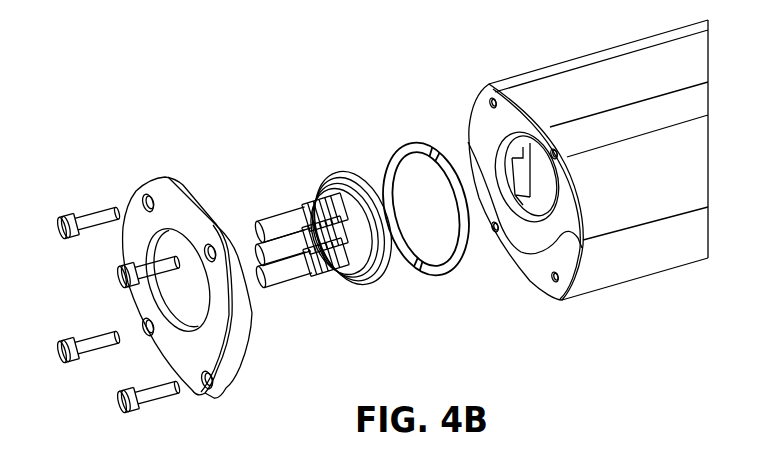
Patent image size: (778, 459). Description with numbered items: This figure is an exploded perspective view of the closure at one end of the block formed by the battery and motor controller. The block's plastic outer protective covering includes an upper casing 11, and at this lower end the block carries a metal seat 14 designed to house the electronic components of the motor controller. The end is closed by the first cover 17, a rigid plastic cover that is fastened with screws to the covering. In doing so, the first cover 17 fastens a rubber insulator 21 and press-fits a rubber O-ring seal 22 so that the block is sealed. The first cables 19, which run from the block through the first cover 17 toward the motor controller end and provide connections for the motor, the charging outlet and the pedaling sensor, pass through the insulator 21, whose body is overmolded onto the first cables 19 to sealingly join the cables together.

The upper casing 11 is at (608, 75).
The metal seat 14 is at (620, 263).
The first cover 17 is at (135, 223).
The first cables 19 is at (277, 220).
The insulator 21 is at (373, 283).
The O-ring seal 22 is at (398, 152).